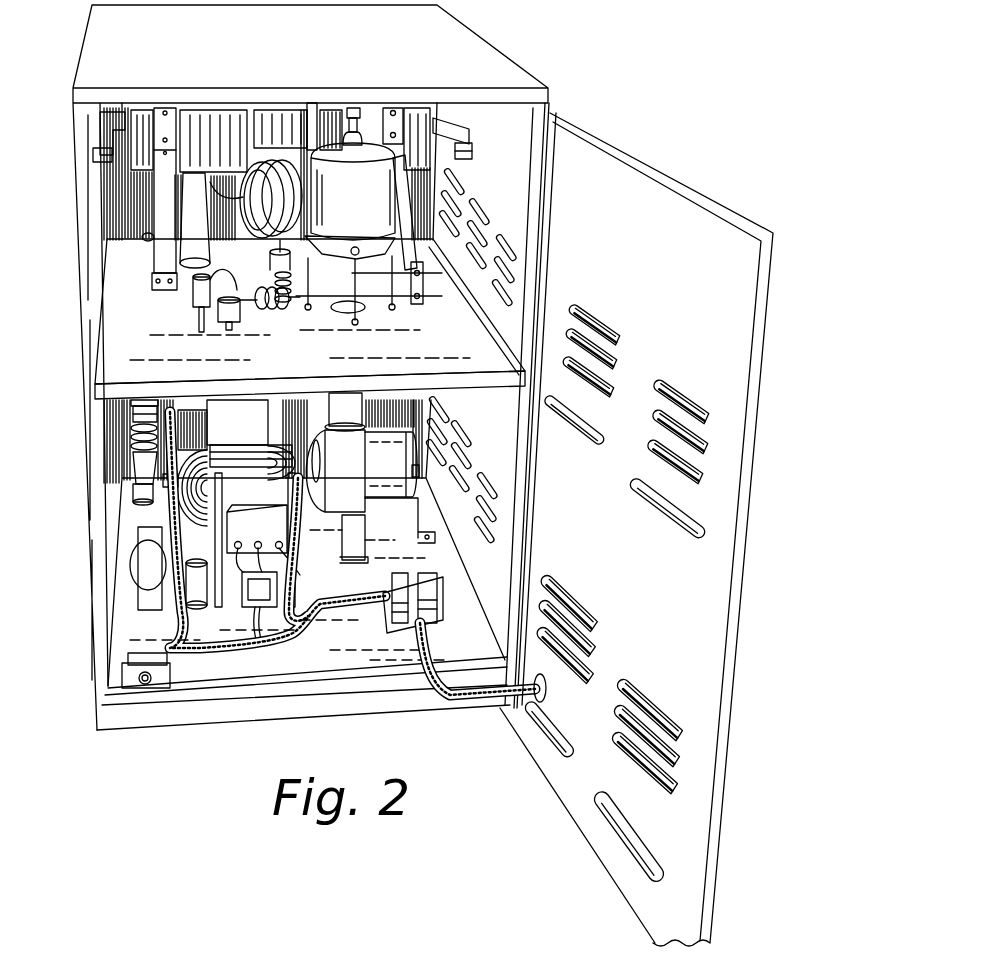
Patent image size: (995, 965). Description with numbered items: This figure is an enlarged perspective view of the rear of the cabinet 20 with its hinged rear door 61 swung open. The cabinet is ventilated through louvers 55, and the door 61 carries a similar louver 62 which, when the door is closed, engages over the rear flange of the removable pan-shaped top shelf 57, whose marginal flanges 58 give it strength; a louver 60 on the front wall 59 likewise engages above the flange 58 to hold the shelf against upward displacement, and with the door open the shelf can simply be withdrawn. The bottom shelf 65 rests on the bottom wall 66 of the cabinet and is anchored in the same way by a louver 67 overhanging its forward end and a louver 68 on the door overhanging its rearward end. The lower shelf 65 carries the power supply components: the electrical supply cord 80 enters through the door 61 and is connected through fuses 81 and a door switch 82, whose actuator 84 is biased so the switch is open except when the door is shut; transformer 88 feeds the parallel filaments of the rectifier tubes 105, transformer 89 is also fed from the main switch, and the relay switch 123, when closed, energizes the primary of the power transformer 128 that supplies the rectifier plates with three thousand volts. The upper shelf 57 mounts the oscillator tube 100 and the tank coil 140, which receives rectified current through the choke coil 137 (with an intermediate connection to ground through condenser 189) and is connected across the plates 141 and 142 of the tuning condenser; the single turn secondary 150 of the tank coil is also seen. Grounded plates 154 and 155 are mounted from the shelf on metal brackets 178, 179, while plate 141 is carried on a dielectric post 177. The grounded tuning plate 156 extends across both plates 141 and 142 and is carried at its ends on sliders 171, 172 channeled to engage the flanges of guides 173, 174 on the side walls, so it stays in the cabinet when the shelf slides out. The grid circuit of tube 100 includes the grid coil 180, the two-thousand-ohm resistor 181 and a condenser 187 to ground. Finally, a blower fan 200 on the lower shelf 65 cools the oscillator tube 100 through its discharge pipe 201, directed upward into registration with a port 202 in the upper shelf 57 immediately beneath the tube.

The cabinet apparatus 20 is at (76, 104).
The louvers 55 is at (495, 235).
The top shelf 57 is at (117, 358).
The marginal flanges 58 is at (100, 342).
The front wall 59 is at (110, 222).
The louver 60 is at (146, 242).
The hinged door 61 is at (681, 215).
The louver 62 is at (640, 482).
The bottom shelf 65 is at (120, 632).
The bottom wall 66 is at (222, 709).
The louver 67 is at (172, 488).
The louver 68 is at (569, 756).
The electrical supply cord 80 is at (478, 701).
The fuses 81 is at (386, 606).
The door switch 82 is at (158, 661).
The actuator 84 is at (124, 676).
The transformer 88 is at (134, 568).
The transformer 89 is at (420, 472).
The oscillator tube 100 is at (368, 160).
The rectifier tubes 105 is at (134, 441).
The relay switch 123 is at (263, 575).
The power transformer 128 is at (233, 420).
The choke coil 137 is at (276, 257).
The tank coil 140 is at (243, 197).
The plate of the tuning condenser 141 is at (246, 115).
The plate of the tuning condenser 142 is at (317, 122).
The single turn secondary 150 is at (266, 176).
The grounded plate 154 is at (326, 127).
The grounded plate 155 is at (190, 124).
The tuning plate 156 is at (270, 111).
The slider 171 is at (448, 126).
The guide 173 is at (473, 152).
The guide 174 is at (95, 157).
The slider 172 is at (104, 137).
The dielectric post 177 is at (193, 249).
The metal bracket 178 is at (404, 194).
The metal bracket 179 is at (157, 203).
The grid coil 180 is at (288, 310).
The resistor 181 is at (195, 309).
The condenser 187 is at (235, 322).
The condenser 189 is at (276, 275).
The blower fan 200 is at (345, 473).
The discharge pipe 201 is at (348, 405).
The port 202 is at (343, 318).